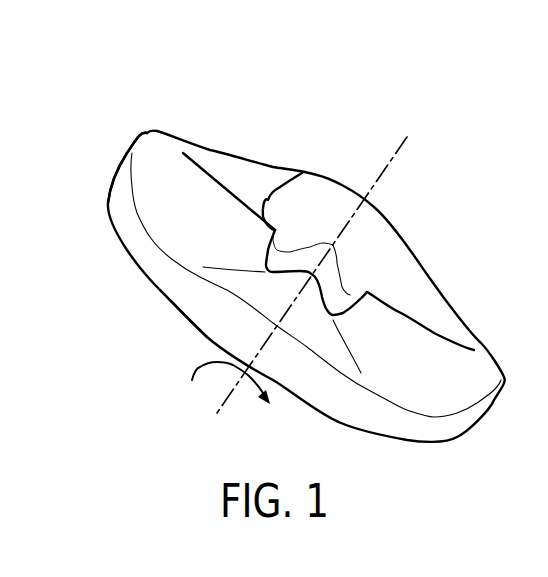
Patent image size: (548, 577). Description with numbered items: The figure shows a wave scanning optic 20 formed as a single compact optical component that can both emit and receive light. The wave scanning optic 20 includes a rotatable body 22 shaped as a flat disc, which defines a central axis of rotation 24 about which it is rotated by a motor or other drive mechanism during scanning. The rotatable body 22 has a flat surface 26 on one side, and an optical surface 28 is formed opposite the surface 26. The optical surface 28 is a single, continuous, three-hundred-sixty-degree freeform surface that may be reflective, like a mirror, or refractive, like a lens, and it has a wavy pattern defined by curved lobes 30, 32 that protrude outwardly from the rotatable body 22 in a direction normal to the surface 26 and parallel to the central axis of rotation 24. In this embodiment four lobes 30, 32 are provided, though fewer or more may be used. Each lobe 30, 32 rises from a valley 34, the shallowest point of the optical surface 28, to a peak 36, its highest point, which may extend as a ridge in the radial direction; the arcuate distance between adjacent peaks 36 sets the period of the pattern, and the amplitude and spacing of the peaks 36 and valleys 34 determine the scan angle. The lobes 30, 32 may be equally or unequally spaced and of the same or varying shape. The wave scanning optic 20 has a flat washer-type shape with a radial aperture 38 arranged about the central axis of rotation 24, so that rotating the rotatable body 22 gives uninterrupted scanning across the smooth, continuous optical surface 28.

The wave scanning optic 20 is at (143, 111).
The rotatable body 22 is at (187, 283).
The central axis of rotation 24 is at (401, 148).
The surface 26 is at (200, 333).
The optical surface 28 is at (200, 185).
The lobe 30 is at (235, 207).
The lobe 32 is at (406, 323).
The valley 34 is at (350, 293).
The peak 36 is at (302, 173).
The radial aperture 38 is at (338, 253).